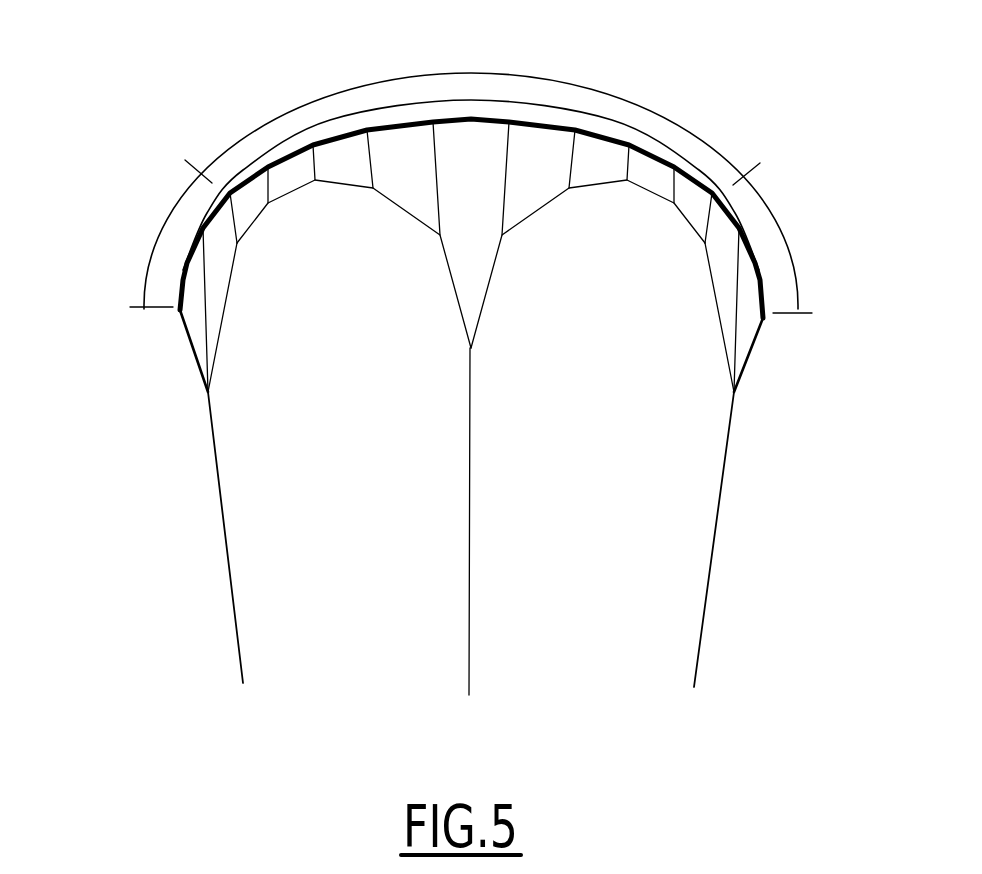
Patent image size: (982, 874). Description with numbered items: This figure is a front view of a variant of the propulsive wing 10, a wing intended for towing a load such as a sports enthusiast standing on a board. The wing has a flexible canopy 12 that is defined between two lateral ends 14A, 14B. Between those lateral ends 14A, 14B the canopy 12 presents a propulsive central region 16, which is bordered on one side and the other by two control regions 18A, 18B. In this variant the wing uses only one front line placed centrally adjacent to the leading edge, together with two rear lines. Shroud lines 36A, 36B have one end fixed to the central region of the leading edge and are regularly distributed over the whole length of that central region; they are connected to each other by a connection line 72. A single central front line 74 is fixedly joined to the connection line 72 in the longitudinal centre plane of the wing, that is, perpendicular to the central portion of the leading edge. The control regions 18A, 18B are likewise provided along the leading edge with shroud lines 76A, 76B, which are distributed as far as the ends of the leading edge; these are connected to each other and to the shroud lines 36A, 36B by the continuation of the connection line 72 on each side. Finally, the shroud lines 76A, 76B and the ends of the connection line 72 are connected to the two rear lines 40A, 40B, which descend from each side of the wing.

The propulsive wing 10 is at (259, 81).
The flexible canopy 12 is at (520, 115).
The lateral end 14A is at (171, 333).
The lateral end 14B is at (768, 338).
The propulsive central region 16 is at (473, 73).
The control region 18A is at (178, 193).
The control region 18B is at (770, 207).
The shroud line 36A is at (370, 160).
The shroud line 36B is at (572, 168).
The rear line 40A is at (222, 515).
The rear line 40B is at (710, 577).
The connection line 72 is at (605, 186).
The central front line 74 is at (470, 590).
The shroud line 76A is at (210, 288).
The shroud line 76B is at (730, 297).